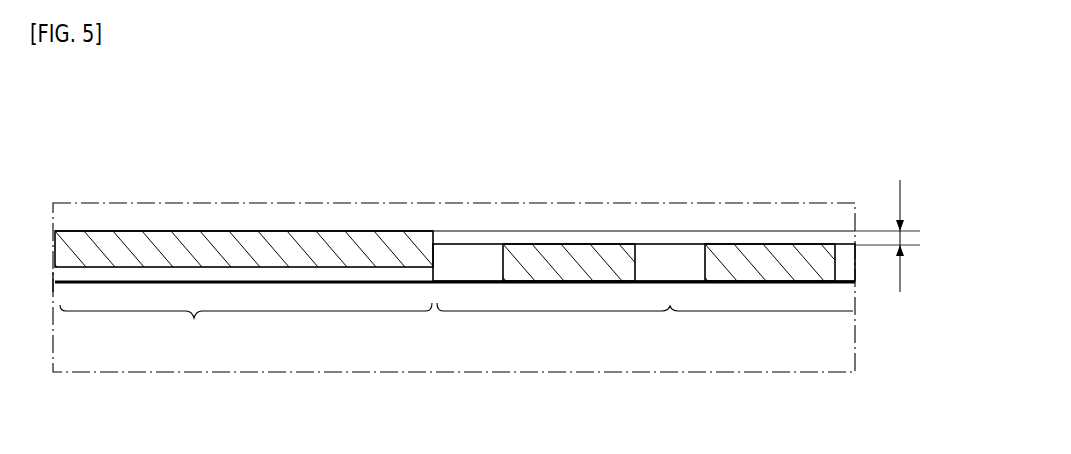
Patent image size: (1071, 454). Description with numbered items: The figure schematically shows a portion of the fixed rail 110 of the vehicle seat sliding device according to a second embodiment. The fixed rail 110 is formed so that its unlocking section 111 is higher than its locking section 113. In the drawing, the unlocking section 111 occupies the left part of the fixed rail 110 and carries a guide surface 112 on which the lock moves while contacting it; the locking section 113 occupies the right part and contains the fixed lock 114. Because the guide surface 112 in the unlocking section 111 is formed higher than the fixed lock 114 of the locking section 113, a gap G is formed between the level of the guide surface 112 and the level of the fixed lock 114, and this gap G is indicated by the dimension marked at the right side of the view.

The fixed rail 110 is at (227, 247).
The unlocking section 111 is at (246, 329).
The guide surface 112 is at (333, 228).
The locking section 113 is at (644, 293).
The fixed lock 114 is at (585, 257).
The gap G is at (901, 236).